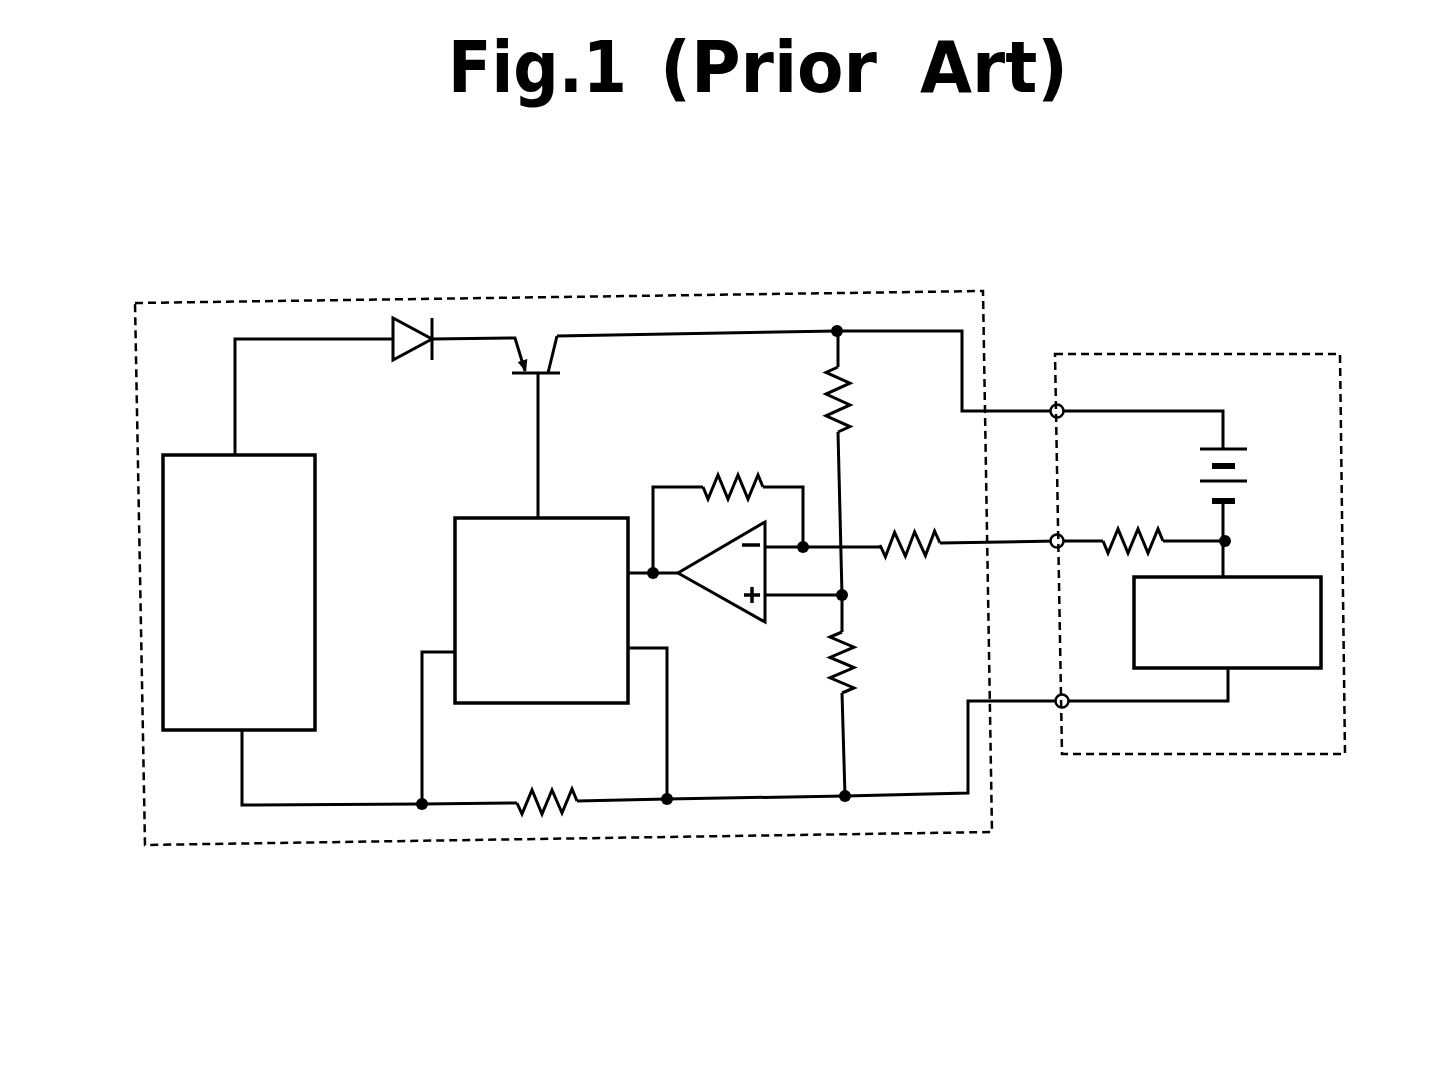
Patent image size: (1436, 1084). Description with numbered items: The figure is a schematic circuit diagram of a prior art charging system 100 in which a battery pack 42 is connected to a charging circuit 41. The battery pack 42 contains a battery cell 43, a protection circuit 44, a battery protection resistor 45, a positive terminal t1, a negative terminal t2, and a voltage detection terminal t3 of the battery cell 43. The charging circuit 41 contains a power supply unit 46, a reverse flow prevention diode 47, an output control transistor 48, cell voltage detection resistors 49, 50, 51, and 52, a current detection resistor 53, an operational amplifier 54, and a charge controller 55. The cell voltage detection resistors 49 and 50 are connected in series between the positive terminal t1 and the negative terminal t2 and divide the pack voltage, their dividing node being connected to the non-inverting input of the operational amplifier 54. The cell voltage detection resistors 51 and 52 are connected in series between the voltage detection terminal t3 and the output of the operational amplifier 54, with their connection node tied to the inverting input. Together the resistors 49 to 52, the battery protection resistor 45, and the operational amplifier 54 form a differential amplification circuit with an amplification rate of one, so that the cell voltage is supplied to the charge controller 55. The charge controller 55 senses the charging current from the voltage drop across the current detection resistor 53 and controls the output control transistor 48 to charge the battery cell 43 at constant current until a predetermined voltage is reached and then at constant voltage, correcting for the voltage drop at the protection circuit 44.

The charging system 100 is at (1257, 153).
The charging circuit 41 is at (843, 290).
The battery pack 42 is at (1218, 355).
The battery cell 43 is at (1233, 449).
The protection circuit 44 is at (1321, 618).
The battery protection resistor 45 is at (1135, 525).
The power supply unit 46 is at (276, 454).
The reverse flow prevention diode 47 is at (413, 360).
The output control transistor 48 is at (550, 378).
The cell voltage detection resistor 49 is at (846, 383).
The cell voltage detection resistor 50 is at (852, 660).
The cell voltage detection resistor 51 is at (905, 530).
The cell voltage detection resistor 52 is at (741, 470).
The current detection resistor 53 is at (552, 786).
The operational amplifier 54 is at (742, 612).
The charge controller 55 is at (453, 578).
The positive terminal t1 is at (1052, 406).
The negative terminal t2 is at (1057, 696).
The voltage detection terminal t3 is at (1052, 536).